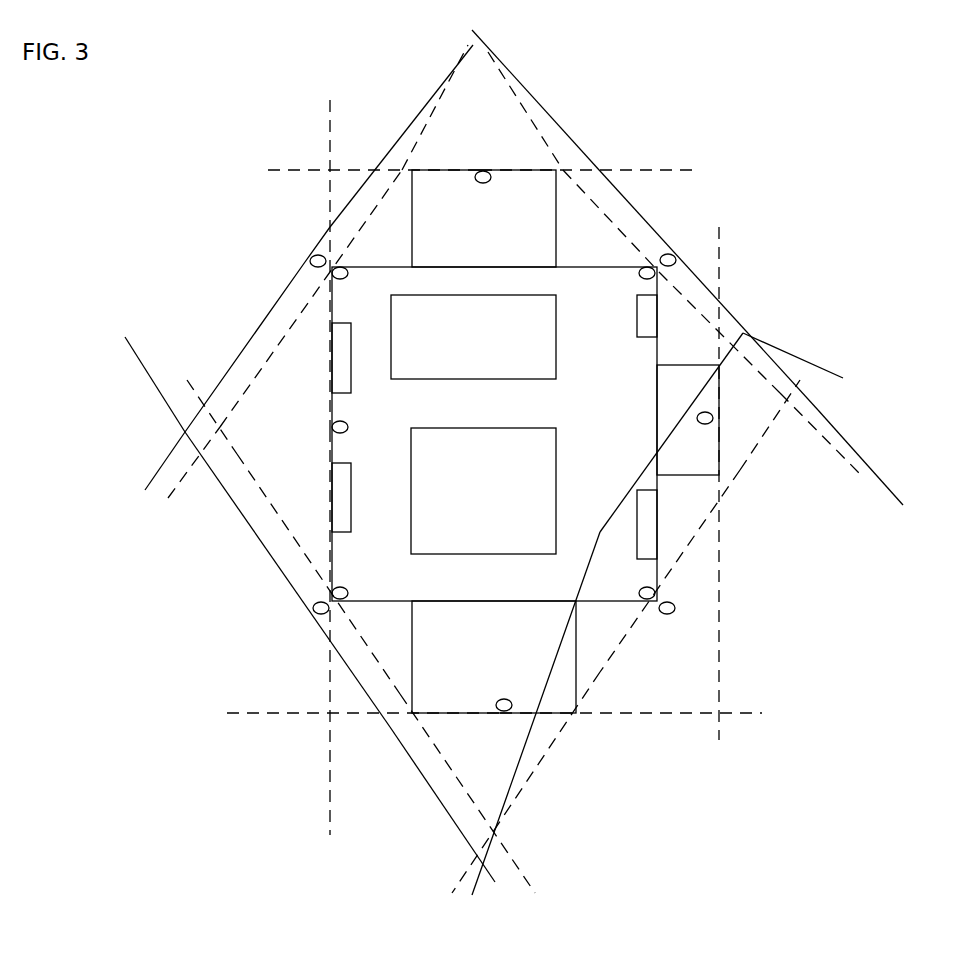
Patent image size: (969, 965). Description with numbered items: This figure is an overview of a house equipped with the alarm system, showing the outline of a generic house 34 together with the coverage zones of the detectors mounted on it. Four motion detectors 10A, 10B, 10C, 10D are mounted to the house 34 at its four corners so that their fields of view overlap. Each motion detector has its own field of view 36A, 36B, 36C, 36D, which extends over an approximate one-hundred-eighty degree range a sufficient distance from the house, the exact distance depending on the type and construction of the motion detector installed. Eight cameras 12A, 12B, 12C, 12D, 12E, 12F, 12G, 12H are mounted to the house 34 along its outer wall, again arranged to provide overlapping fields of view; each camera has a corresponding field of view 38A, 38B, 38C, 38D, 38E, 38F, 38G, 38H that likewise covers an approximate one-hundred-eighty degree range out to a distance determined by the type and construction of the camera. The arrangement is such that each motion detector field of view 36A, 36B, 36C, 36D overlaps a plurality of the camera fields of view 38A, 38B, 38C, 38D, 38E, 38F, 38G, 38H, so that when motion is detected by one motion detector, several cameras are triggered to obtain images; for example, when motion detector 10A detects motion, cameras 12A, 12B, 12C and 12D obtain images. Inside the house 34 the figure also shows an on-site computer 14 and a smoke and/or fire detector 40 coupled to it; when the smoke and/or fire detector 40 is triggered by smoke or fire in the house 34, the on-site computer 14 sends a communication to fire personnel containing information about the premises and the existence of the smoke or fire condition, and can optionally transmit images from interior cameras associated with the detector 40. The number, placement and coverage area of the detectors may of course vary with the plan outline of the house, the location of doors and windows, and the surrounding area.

The motion detector 10A is at (294, 244).
The motion detector 10B is at (677, 243).
The motion detector 10C is at (692, 621).
The motion detector 10D is at (285, 598).
The camera 12A is at (358, 330).
The camera 12B is at (484, 218).
The camera 12C is at (617, 302).
The camera 12D is at (688, 420).
The camera 12E is at (617, 544).
The camera 12F is at (494, 657).
The camera 12G is at (359, 531).
The camera 12H is at (366, 438).
The on-site computer 14 is at (483, 491).
The house 34 is at (607, 428).
The field of view 36A is at (226, 215).
The field of view 36B is at (779, 217).
The field of view 36C is at (701, 700).
The field of view 36D is at (226, 670).
The field of view 38A is at (226, 308).
The field of view 38B is at (509, 163).
The field of view 38C is at (858, 248).
The field of view 38D is at (781, 428).
The field of view 38E is at (791, 580).
The field of view 38F is at (512, 792).
The field of view 38G is at (306, 792).
The field of view 38H is at (304, 428).
The smoke and/or fire detector 40 is at (473, 337).